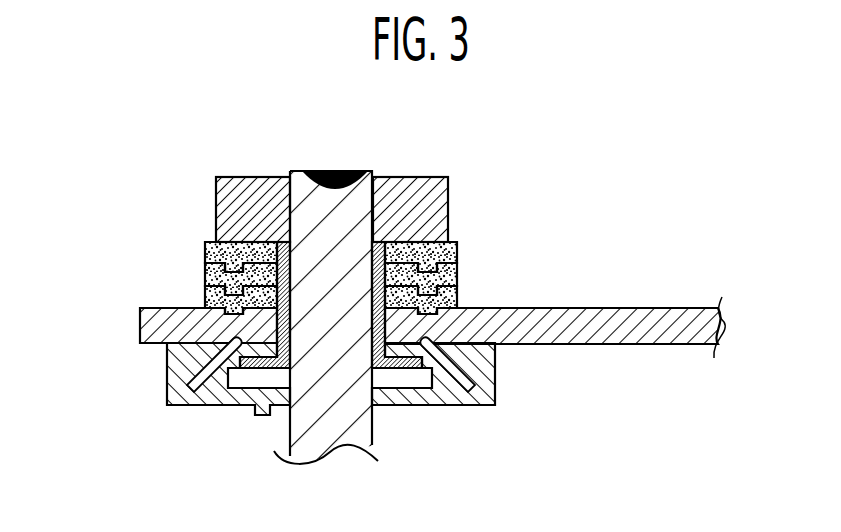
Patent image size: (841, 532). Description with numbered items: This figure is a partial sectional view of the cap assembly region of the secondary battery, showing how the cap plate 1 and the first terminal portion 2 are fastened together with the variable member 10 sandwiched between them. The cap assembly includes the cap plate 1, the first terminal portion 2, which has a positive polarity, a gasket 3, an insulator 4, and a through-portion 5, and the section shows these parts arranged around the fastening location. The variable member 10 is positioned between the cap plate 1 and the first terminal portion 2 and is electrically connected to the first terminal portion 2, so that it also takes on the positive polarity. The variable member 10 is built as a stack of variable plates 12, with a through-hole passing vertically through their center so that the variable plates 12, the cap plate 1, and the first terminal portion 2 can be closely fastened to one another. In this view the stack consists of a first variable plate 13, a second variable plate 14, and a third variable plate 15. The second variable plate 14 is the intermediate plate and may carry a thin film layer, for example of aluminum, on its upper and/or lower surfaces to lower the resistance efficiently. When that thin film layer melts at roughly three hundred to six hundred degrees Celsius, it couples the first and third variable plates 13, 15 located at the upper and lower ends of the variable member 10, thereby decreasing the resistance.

The cap plate 1 is at (618, 312).
The first terminal portion 2 is at (412, 180).
The gasket 3 is at (470, 406).
The insulator 4 is at (236, 339).
The through-portion 5 is at (325, 452).
The variable member 10 is at (136, 209).
The variable plates 12 is at (265, 267).
The first variable plate 13 is at (203, 294).
The second variable plate 14 is at (203, 271).
The third variable plate 15 is at (203, 245).